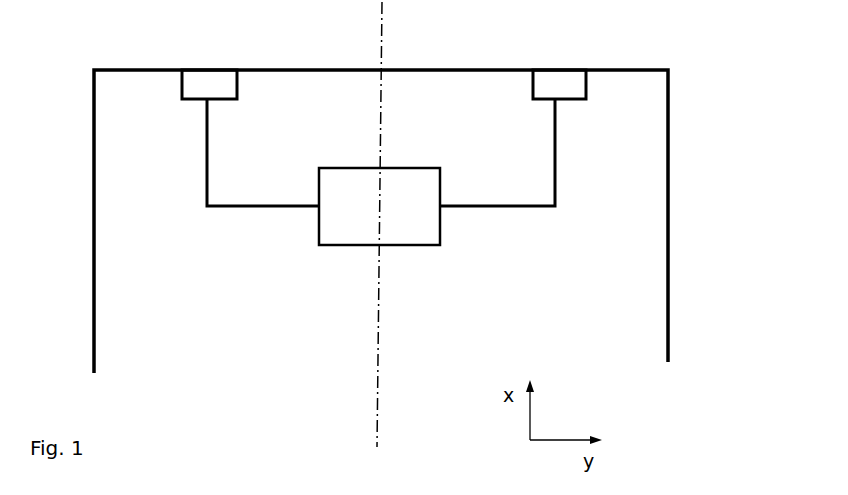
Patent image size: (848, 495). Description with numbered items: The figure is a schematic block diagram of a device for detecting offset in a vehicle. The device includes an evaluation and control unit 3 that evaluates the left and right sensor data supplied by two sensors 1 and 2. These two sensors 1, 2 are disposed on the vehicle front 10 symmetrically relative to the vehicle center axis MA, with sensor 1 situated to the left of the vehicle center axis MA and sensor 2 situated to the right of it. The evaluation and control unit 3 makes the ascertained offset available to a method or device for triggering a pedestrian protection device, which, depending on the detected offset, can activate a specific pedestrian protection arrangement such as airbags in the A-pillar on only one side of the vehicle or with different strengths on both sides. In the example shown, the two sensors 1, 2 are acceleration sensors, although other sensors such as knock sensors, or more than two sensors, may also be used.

The vehicle front 10 is at (381, 192).
The sensor 1 is at (223, 110).
The sensor 2 is at (572, 115).
The evaluation and control unit 3 is at (403, 222).
The vehicle center axis MA is at (342, 224).